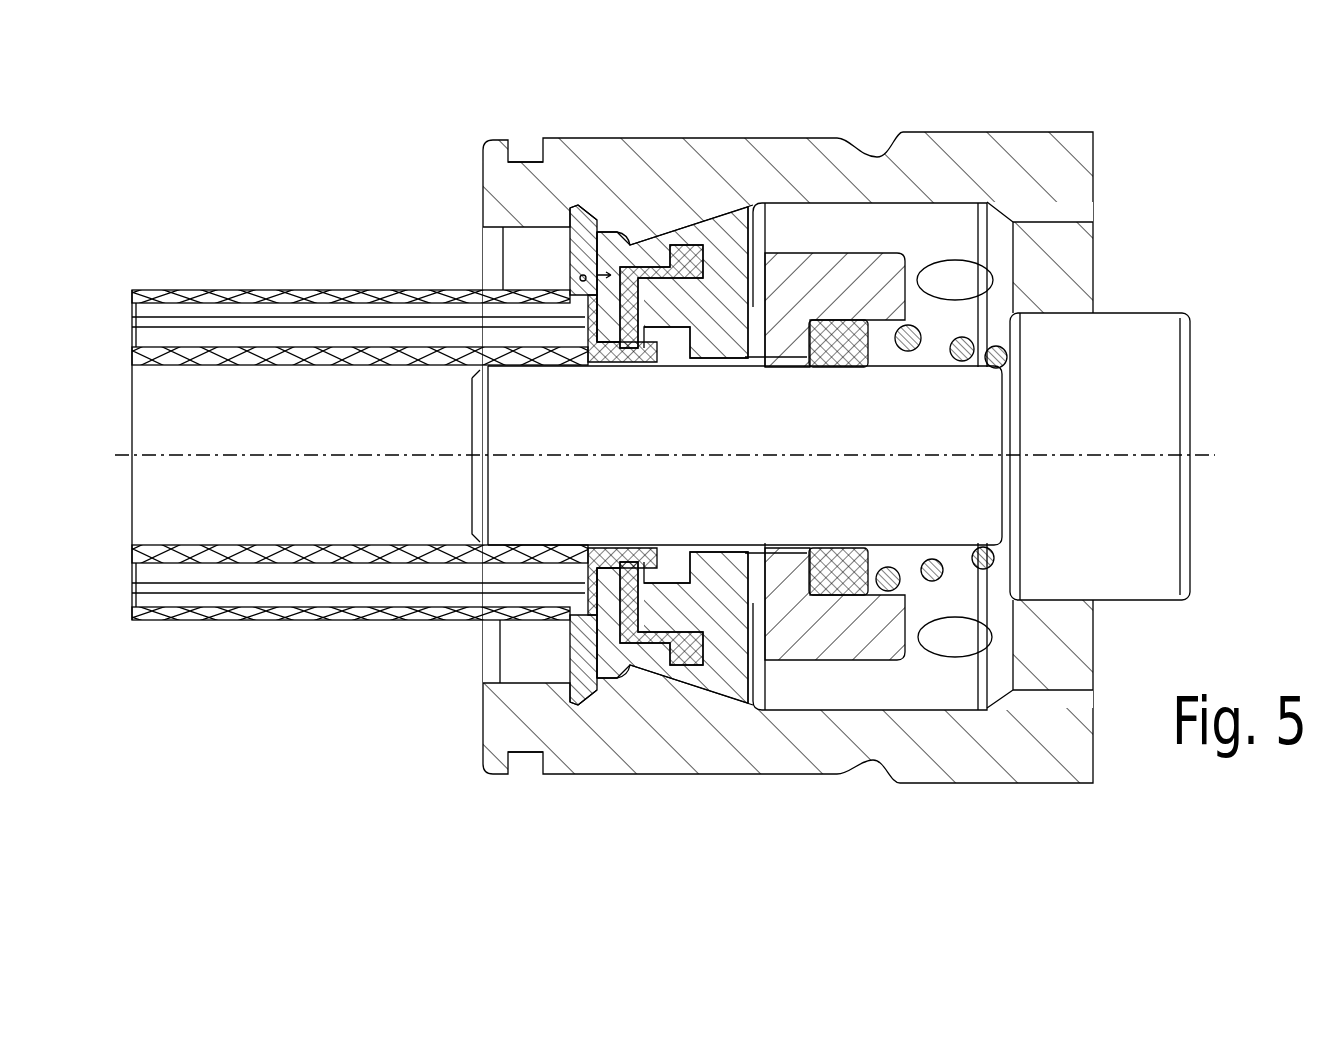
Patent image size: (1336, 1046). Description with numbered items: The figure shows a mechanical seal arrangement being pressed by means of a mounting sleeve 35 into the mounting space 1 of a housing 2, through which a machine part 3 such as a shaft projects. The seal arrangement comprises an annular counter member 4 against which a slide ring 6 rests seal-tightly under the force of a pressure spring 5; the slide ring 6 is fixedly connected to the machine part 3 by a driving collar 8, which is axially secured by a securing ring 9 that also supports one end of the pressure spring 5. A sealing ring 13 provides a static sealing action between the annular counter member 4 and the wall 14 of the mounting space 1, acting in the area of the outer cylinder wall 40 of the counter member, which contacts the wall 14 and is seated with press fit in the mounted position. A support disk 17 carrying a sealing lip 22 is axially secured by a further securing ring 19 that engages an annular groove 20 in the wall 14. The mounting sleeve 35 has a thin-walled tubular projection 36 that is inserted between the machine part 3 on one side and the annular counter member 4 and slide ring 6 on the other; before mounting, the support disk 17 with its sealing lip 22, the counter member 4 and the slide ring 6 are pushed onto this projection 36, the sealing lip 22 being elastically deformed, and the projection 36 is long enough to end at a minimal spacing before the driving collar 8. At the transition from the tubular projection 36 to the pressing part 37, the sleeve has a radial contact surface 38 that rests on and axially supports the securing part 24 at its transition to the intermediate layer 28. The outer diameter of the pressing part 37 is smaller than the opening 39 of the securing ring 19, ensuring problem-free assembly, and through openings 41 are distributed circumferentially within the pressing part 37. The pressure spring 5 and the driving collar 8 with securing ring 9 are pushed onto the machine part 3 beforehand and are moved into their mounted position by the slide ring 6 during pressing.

The mounting space 1 is at (827, 230).
The housing 2 is at (633, 188).
The machine part 3 is at (540, 505).
The annular counter member 4 is at (732, 272).
The pressure spring 5 is at (975, 335).
The slide ring 6 is at (862, 283).
The driving collar 8 is at (935, 258).
The securing ring 9 is at (900, 545).
The sealing ring 13 is at (690, 262).
The wall 14 is at (700, 690).
The support disk 17 is at (570, 208).
The securing ring 19 is at (577, 208).
The annular groove 20 is at (590, 212).
The sealing lip 22 is at (580, 278).
The securing part 24 is at (565, 620).
The intermediate layer 28 is at (483, 385).
The mounting sleeve 35 is at (230, 620).
The tubular projection 36 is at (585, 668).
The pressing part 37 is at (327, 615).
The radial contact surface 38 is at (447, 293).
The opening 39 is at (570, 240).
The outer cylinder wall 40 is at (745, 683).
The through openings 41 is at (166, 603).